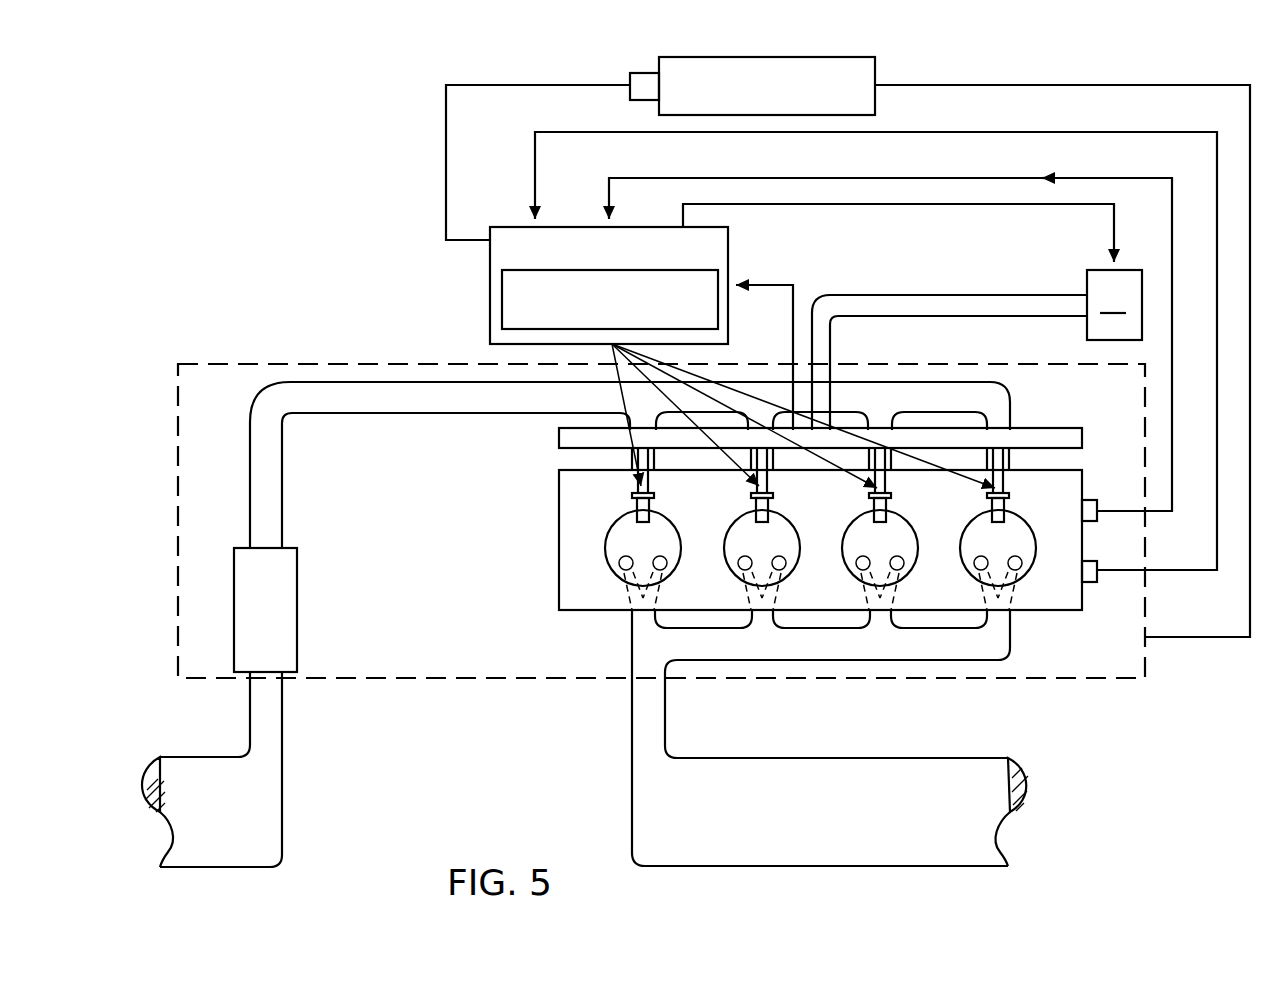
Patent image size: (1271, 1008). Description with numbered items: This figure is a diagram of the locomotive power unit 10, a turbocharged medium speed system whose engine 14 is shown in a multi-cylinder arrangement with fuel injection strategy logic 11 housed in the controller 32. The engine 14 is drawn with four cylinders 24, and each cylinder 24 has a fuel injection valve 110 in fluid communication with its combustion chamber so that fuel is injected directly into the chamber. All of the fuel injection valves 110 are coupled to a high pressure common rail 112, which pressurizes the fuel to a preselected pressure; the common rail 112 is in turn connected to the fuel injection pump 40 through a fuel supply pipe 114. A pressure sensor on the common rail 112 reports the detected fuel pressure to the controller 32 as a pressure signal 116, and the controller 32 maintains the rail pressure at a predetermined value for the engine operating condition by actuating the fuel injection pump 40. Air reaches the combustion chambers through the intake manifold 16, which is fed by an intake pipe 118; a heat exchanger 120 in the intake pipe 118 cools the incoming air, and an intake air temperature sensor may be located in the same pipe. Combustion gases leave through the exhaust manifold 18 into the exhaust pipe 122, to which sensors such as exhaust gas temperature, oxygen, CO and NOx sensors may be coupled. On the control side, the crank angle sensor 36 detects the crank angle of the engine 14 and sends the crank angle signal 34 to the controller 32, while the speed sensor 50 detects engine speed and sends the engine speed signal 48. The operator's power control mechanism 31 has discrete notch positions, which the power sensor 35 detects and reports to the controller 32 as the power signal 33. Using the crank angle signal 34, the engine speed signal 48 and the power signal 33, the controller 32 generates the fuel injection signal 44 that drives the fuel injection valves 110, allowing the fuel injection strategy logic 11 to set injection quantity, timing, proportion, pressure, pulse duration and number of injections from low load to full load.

The locomotive power unit 10 is at (150, 138).
The fuel injection strategy logic 11 is at (502, 318).
The engine 14 is at (1030, 686).
The intake manifold 16 is at (905, 388).
The exhaust manifold 18 is at (660, 705).
The cylinder 24 is at (680, 553).
The power control mechanism 31 is at (877, 72).
The controller 32 is at (490, 285).
The power signal 33 is at (446, 162).
The crank angle signal 34 is at (1172, 488).
The power sensor 35 is at (643, 88).
The crank angle sensor 36 is at (1090, 500).
The fuel injection pump 40 is at (912, 272).
The fuel injection signal 44 is at (655, 393).
The engine speed signal 48 is at (1178, 572).
The speed sensor 50 is at (1090, 561).
The fuel injection valve 110 is at (748, 494).
The high pressure common rail 112 is at (1068, 428).
The fuel supply pipe 114 is at (933, 302).
The pressure signal 116 is at (766, 284).
The intake pipe 118 is at (275, 492).
The heat exchanger 120 is at (297, 608).
The exhaust pipe 122 is at (850, 765).